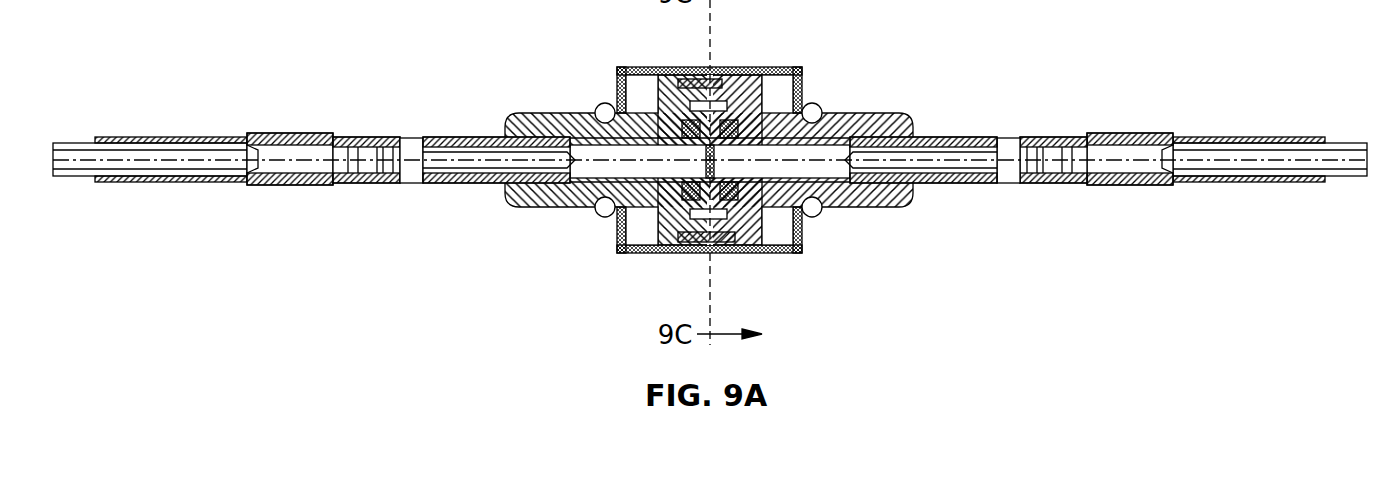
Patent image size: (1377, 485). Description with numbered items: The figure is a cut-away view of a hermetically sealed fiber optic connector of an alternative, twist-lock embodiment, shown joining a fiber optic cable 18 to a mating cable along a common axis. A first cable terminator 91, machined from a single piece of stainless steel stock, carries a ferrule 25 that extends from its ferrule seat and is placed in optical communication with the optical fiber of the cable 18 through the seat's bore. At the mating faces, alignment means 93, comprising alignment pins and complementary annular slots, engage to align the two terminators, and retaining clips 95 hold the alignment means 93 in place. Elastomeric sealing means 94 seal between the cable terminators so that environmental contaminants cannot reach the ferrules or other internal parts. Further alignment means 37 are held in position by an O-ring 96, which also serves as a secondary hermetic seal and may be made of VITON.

The fiber optic cable 18 is at (1296, 170).
The ferrule 25 is at (847, 113).
The alignment means 37 is at (613, 113).
The first cable terminator 91 is at (902, 115).
The alignment means 93 is at (716, 70).
The sealing means 94 is at (730, 253).
The retaining clips 95 is at (818, 217).
The O-ring 96 is at (660, 243).